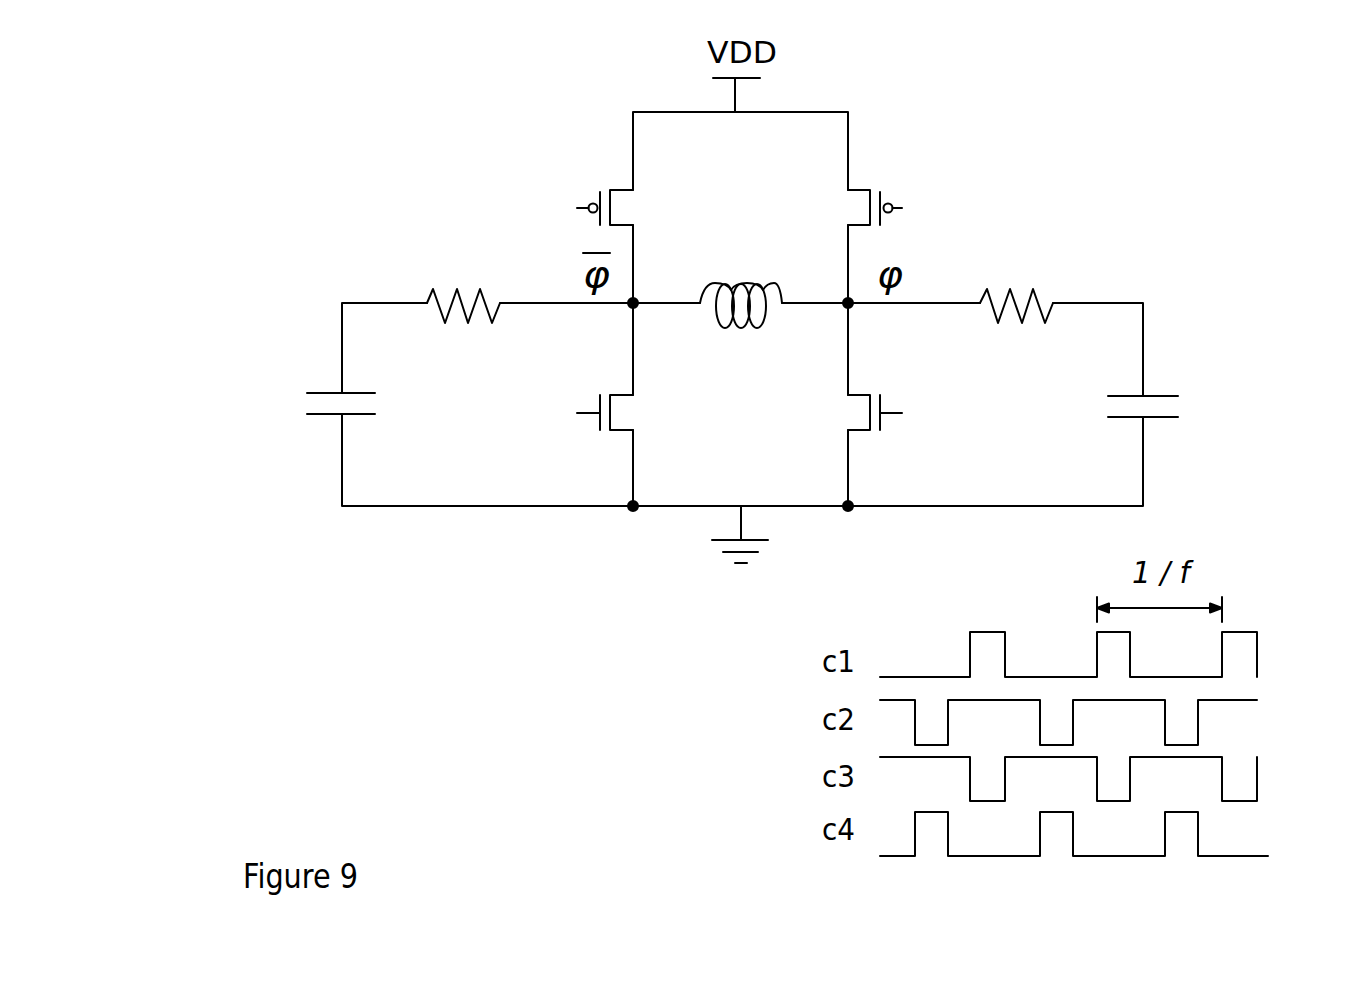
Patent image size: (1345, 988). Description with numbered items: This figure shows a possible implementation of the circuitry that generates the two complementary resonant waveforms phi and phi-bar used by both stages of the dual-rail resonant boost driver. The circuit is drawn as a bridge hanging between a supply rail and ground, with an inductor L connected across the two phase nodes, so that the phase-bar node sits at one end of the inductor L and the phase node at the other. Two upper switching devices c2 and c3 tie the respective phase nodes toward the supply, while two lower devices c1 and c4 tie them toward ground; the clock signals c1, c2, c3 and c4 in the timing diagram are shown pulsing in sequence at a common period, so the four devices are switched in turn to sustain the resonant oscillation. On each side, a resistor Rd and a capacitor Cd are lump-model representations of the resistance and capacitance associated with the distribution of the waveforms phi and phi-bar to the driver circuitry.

The clock signal c1 is at (580, 413).
The second switching transistor / clock c2 is at (581, 207).
The third switching transistor / clock c3 is at (900, 207).
The fourth switching transistor / clock c4 is at (900, 412).
The inductor L is at (741, 281).
The distribution resistance Rd is at (740, 280).
The distribution capacitance Cd is at (742, 403).